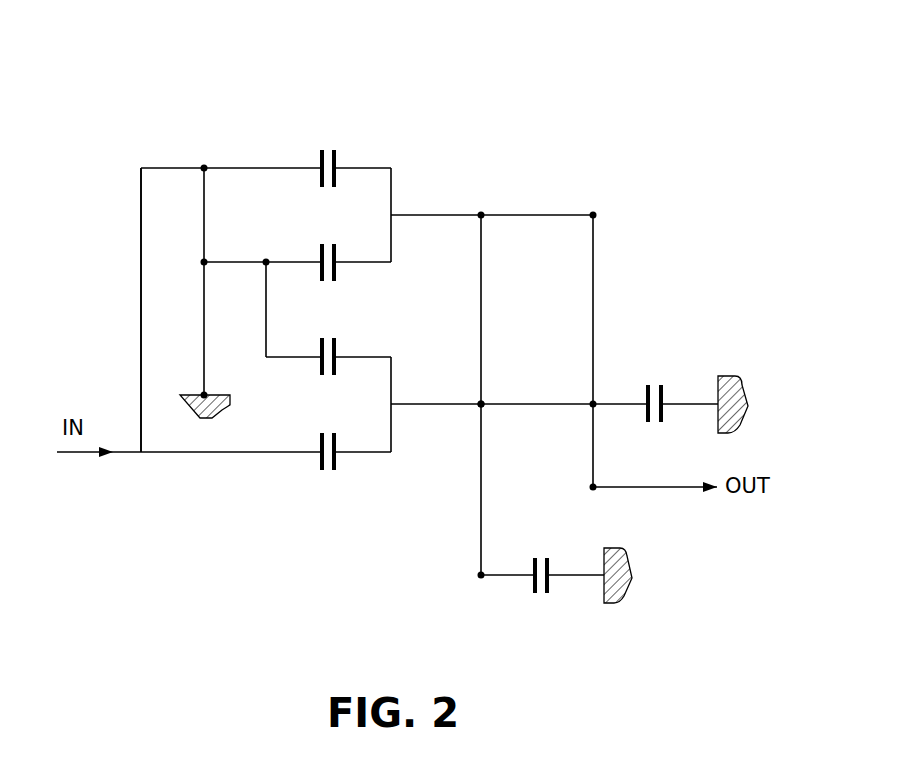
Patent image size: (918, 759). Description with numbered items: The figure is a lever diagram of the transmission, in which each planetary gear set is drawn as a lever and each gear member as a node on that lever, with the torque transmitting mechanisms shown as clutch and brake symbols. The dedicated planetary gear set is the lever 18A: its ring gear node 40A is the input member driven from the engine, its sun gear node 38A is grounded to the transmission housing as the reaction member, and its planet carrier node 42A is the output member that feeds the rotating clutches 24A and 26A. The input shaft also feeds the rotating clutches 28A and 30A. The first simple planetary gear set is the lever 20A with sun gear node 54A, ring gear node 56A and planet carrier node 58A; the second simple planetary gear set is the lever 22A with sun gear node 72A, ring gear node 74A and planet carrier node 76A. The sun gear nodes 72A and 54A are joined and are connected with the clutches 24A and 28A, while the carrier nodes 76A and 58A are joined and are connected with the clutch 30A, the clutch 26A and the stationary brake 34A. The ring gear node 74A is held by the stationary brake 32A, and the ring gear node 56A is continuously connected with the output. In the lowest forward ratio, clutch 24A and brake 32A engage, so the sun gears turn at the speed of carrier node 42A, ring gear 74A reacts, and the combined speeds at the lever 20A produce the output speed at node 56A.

The lever 18A is at (184, 286).
The lever 20A is at (607, 376).
The lever 22A is at (476, 410).
The torque transmitting mechanism 24A is at (330, 240).
The torque transmitting mechanism 26A is at (329, 334).
The torque transmitting mechanism 28A is at (329, 147).
The torque transmitting mechanism 30A is at (328, 473).
The torque transmitting mechanism 32A is at (541, 598).
The torque transmitting mechanism 34A is at (656, 380).
The node 38A is at (205, 395).
The node 40A is at (204, 166).
The node 42A is at (200, 262).
The node 54A is at (594, 211).
The node 56A is at (598, 495).
The node 58A is at (589, 410).
The node 72A is at (481, 211).
The node 74A is at (475, 570).
The node 76A is at (485, 398).